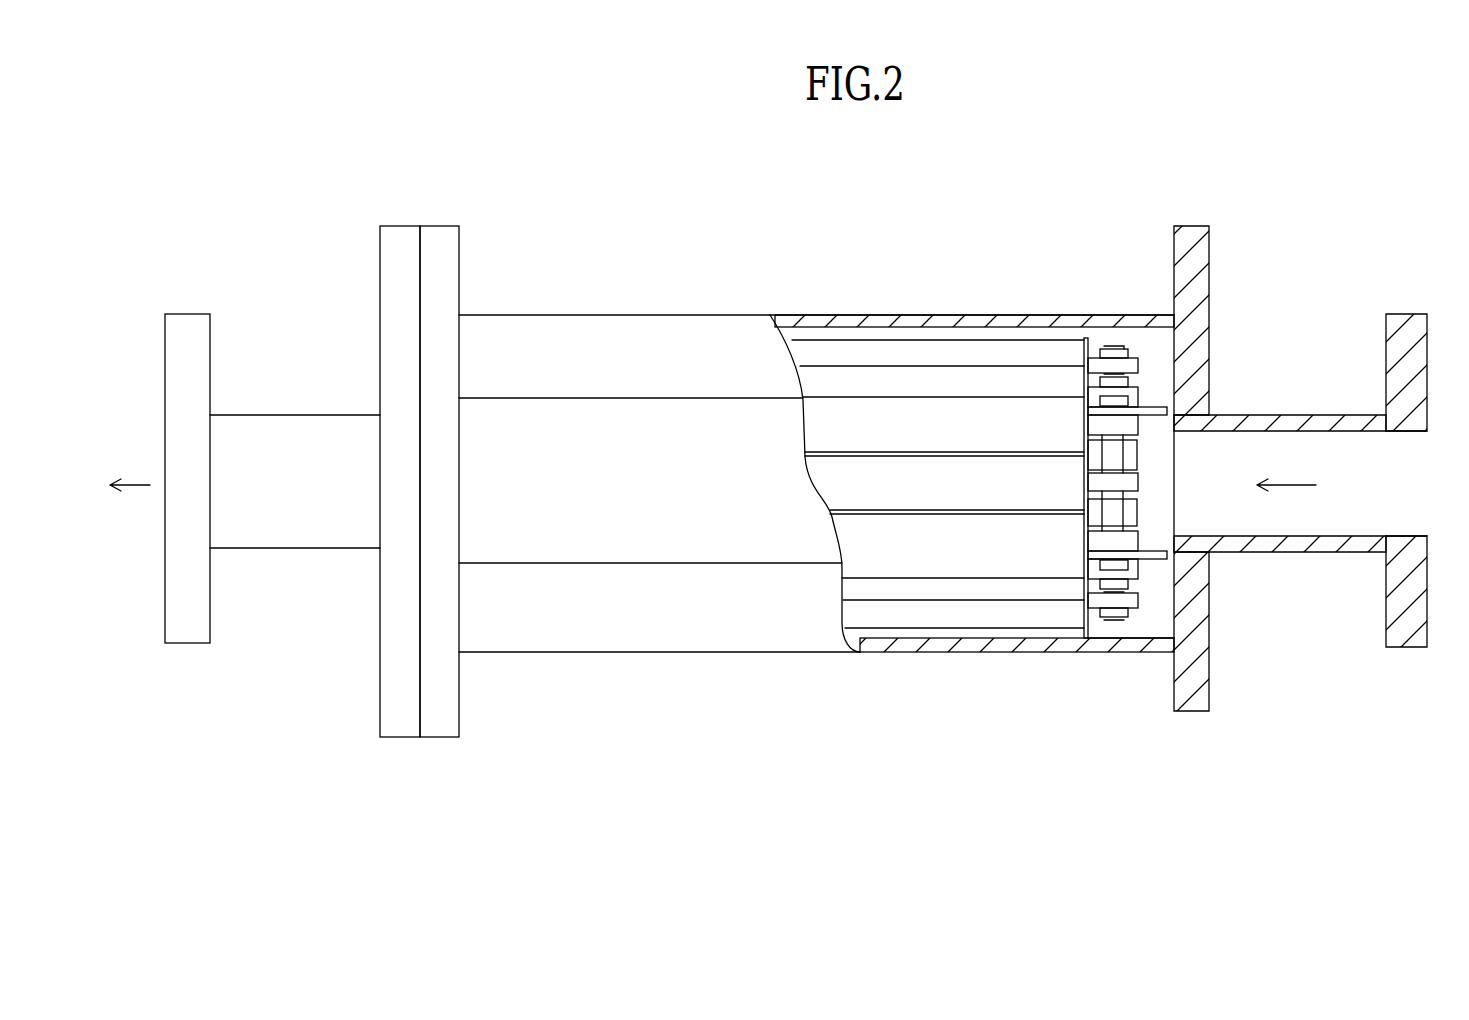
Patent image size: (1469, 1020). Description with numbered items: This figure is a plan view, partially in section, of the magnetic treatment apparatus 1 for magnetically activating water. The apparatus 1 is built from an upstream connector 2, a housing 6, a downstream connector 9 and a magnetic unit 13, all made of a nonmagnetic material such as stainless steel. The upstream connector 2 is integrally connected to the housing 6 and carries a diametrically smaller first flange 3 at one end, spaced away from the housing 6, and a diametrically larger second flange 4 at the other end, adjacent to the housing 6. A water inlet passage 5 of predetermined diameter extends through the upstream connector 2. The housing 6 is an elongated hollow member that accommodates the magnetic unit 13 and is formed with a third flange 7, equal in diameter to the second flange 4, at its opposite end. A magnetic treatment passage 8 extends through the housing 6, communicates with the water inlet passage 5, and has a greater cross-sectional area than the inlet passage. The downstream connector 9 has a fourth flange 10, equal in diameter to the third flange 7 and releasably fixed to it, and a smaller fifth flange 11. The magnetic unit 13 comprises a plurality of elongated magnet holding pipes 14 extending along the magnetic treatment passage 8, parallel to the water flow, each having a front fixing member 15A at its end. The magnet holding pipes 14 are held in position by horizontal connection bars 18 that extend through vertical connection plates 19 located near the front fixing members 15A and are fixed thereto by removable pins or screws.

The magnetic treatment apparatus 1 is at (821, 718).
The upstream connector 2 is at (1312, 552).
The first flange 3 is at (1427, 559).
The second flange 4 is at (1203, 316).
The water inlet passage 5 is at (1328, 450).
The housing 6 is at (661, 315).
The third flange 7 is at (459, 712).
The magnetic treatment passage 8 is at (1150, 622).
The downstream connector 9 is at (304, 415).
The fourth flange 10 is at (380, 658).
The fifth flange 11 is at (165, 612).
The magnetic unit 13 is at (852, 382).
The magnet holding pipe 14 is at (977, 477).
The front fixing member 15A is at (1100, 600).
The horizontal connection bar 18 is at (1112, 452).
The vertical connection plate 19 is at (1160, 406).